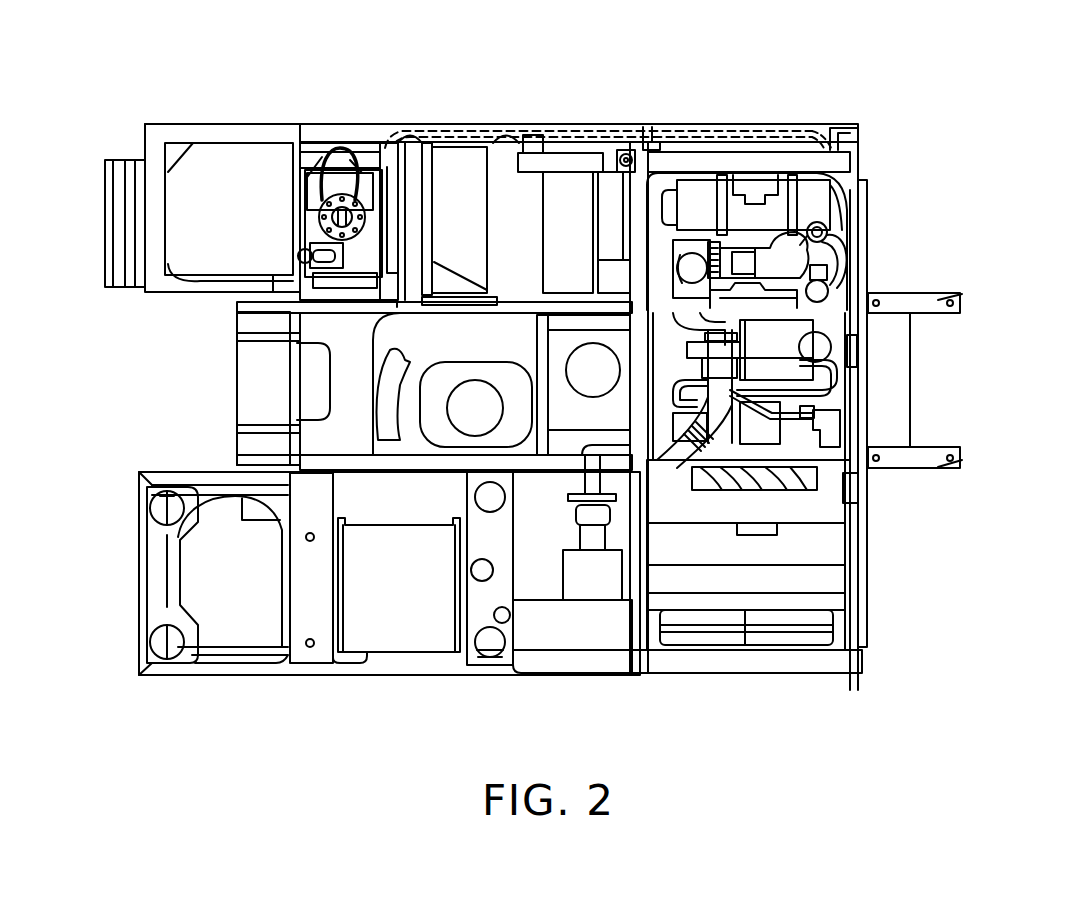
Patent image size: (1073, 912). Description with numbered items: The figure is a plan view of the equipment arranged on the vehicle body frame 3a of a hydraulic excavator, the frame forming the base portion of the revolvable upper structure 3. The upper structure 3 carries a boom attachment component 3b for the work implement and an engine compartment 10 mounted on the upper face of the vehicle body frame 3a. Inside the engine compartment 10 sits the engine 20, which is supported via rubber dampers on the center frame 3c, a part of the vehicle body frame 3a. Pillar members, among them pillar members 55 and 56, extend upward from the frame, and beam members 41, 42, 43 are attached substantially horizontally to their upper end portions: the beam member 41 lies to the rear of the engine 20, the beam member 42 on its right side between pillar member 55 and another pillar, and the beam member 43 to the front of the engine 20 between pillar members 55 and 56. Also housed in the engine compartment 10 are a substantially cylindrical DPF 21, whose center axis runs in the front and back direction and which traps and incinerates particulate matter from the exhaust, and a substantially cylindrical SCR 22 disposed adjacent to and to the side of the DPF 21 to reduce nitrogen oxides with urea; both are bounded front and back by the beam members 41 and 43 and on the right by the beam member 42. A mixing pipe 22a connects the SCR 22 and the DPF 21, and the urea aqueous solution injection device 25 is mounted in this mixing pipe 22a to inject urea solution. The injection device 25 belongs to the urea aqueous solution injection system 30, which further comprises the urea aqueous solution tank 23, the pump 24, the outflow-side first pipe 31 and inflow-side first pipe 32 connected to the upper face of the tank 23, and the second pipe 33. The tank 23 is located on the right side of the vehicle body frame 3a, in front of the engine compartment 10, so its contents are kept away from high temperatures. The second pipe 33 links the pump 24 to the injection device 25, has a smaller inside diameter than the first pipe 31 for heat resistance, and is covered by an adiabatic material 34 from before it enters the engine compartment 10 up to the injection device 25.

The upper structure 3 is at (861, 109).
The vehicle body frame 3a is at (200, 130).
The boom attachment component 3b is at (258, 378).
The center frame 3c is at (963, 313).
The engine compartment 10 is at (806, 153).
The engine 20 is at (840, 407).
The DPF 21 is at (818, 190).
The SCR 22 is at (690, 242).
The mixing pipe 22a is at (768, 235).
The urea aqueous solution tank 23 is at (293, 185).
The pump 24 is at (336, 160).
The urea aqueous solution injection device 25 is at (842, 262).
The urea aqueous solution injection system 30 is at (357, 80).
The outflow-side first pipe 31 is at (374, 162).
The inflow-side first pipe 32 is at (312, 178).
The second pipe 33 is at (458, 130).
The adiabatic material 34 is at (580, 126).
The beam member 41 is at (862, 224).
The beam member 42 is at (712, 160).
The beam member 43 is at (646, 372).
The pillar member 55 is at (626, 150).
The pillar member 56 is at (632, 620).